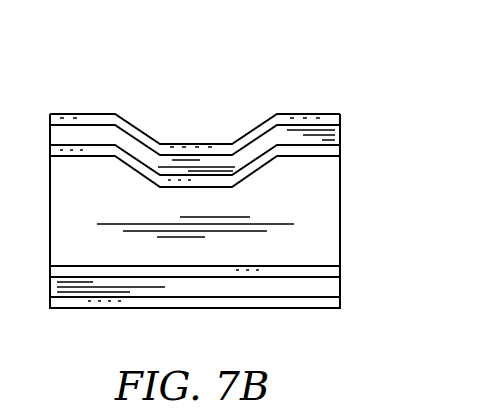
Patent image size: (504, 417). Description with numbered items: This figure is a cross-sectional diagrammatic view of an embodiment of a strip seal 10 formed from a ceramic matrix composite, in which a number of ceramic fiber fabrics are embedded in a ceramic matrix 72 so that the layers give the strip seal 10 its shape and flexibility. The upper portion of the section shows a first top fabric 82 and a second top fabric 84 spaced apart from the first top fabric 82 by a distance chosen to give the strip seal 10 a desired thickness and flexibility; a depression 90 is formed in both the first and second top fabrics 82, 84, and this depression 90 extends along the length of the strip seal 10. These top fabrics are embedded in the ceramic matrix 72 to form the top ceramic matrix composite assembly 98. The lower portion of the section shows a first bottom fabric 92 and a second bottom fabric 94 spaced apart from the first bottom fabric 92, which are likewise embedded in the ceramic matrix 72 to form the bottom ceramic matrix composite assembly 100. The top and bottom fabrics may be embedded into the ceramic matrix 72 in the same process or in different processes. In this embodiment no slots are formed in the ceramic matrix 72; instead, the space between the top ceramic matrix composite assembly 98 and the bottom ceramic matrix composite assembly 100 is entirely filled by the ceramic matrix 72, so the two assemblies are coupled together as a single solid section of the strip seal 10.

The strip seal 10 is at (210, 80).
The ceramic matrix 72 is at (57, 130).
The first top fabric 82 is at (88, 118).
The second top fabric 84 is at (83, 150).
The depression 90 is at (183, 140).
The first bottom fabric 92 is at (200, 275).
The second bottom fabric 94 is at (183, 300).
The top ceramic matrix composite assembly 98 is at (350, 140).
The bottom ceramic matrix composite assembly 100 is at (350, 273).